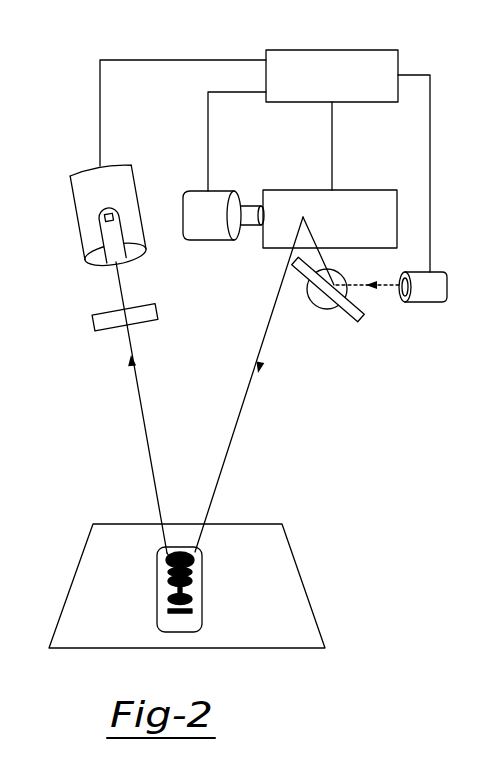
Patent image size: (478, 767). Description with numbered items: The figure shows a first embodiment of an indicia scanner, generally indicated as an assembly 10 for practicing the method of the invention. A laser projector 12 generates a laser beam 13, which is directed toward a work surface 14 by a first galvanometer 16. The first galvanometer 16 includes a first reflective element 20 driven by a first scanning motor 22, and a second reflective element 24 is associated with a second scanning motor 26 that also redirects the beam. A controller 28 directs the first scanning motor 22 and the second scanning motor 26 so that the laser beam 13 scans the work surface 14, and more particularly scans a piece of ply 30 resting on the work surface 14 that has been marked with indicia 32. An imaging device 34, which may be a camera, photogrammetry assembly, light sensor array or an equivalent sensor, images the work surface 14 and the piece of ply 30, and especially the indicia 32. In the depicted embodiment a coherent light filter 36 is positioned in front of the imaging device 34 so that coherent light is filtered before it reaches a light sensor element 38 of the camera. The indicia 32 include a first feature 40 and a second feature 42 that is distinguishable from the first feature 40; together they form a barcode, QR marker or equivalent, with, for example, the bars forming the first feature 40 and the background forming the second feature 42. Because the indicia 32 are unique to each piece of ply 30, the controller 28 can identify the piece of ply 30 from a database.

The assembly 10 is at (75, 150).
The laser projector 12 is at (422, 298).
The laser beam 13 is at (389, 289).
The work surface 14 is at (250, 619).
The first galvanometer 16 is at (296, 178).
The first reflective element 20 is at (364, 228).
The first scanning motor 22 is at (198, 228).
The second reflective element 24 is at (347, 320).
The second scanning motor 26 is at (313, 305).
The controller 28 is at (348, 103).
The piece of ply 30 is at (202, 577).
The indicia 32 is at (179, 545).
The imaging device 34 is at (95, 201).
The coherent light filter 36 is at (92, 324).
The light sensor element 38 is at (101, 223).
The first feature 40 is at (171, 598).
The second feature 42 is at (196, 610).